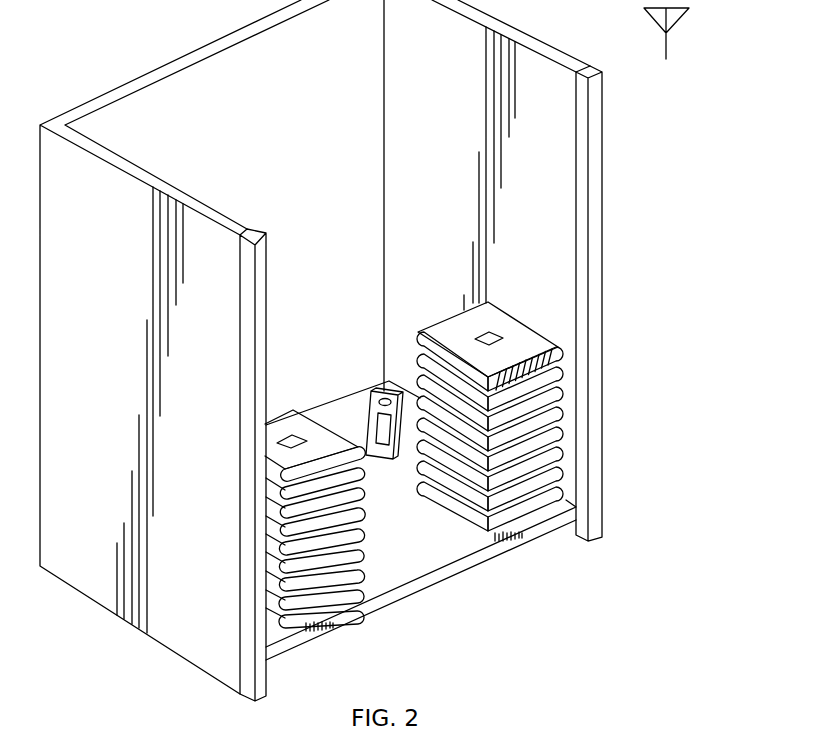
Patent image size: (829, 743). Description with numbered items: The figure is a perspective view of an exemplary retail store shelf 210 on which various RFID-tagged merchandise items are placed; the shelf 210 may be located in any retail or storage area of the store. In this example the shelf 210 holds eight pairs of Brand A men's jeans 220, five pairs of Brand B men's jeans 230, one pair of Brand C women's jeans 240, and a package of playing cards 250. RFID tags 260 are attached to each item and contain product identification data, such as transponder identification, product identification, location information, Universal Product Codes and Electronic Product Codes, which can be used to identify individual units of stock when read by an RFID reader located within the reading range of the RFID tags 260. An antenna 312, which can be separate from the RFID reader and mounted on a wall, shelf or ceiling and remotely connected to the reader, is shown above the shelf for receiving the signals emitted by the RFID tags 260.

The retail store shelf 210 is at (452, 571).
The Brand A men's jeans 220 is at (273, 614).
The Brand B men's jeans 230 is at (553, 390).
The Brand C women's jeans 240 is at (553, 355).
The package of playing cards 250 is at (372, 392).
The RFID tags 260 is at (277, 443).
The antenna 312 is at (667, 32).